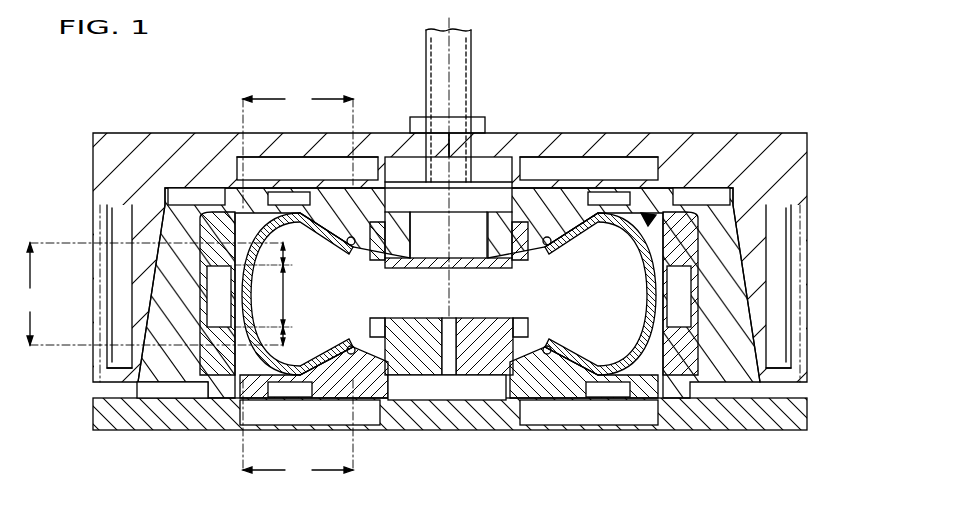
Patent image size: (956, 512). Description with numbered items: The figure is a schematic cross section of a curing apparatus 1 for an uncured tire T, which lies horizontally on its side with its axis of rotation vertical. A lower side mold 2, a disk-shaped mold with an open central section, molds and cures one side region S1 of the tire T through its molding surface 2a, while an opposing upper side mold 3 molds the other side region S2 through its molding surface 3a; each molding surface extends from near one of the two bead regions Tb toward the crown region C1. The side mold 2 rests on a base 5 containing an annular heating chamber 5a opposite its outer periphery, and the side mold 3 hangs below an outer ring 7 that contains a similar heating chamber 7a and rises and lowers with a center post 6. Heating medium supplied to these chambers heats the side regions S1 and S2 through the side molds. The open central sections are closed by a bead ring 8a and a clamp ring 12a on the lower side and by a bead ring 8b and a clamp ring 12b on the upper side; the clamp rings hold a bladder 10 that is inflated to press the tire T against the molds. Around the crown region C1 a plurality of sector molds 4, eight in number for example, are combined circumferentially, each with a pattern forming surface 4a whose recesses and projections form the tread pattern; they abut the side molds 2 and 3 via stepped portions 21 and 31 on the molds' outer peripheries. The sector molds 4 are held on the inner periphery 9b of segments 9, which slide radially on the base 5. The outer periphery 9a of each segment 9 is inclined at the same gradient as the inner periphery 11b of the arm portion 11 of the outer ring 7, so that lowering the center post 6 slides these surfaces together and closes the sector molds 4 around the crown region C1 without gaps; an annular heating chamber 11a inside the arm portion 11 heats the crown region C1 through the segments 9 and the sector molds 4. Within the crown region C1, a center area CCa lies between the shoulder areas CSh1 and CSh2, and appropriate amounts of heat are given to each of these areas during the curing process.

The curing apparatus 1 is at (371, 60).
The side mold 2 is at (322, 395).
The molding surface 2a is at (318, 364).
The side mold 3 is at (267, 197).
The molding surface 3a is at (317, 232).
The sector mold 4 is at (197, 225).
The pattern forming surface 4a is at (247, 293).
The base 5 is at (455, 420).
The heating chamber 5a is at (272, 412).
The center post 6 is at (458, 80).
The outer ring 7 is at (547, 150).
The heating chamber 7a is at (323, 165).
The bead ring 8a is at (368, 330).
The bead ring 8b is at (372, 258).
The segment 9 is at (137, 193).
The outer periphery 9a is at (157, 213).
The inner periphery 9b is at (190, 382).
The bladder 10 is at (633, 252).
The arm portion 11 is at (107, 282).
The heating chamber 11a is at (113, 328).
The inner periphery 11b is at (100, 367).
The clamp ring 12a is at (420, 320).
The clamp ring 12b is at (500, 263).
The stepped portion 21 is at (215, 392).
The stepped portion 31 is at (225, 193).
The tire T is at (648, 215).
The bead region Tb is at (350, 248).
The side region S1 is at (298, 429).
The side region S2 is at (298, 151).
The crown region C1 is at (152, 294).
The shoulder area CSh1 is at (269, 336).
The shoulder area CSh2 is at (269, 254).
The center area CCa is at (291, 296).